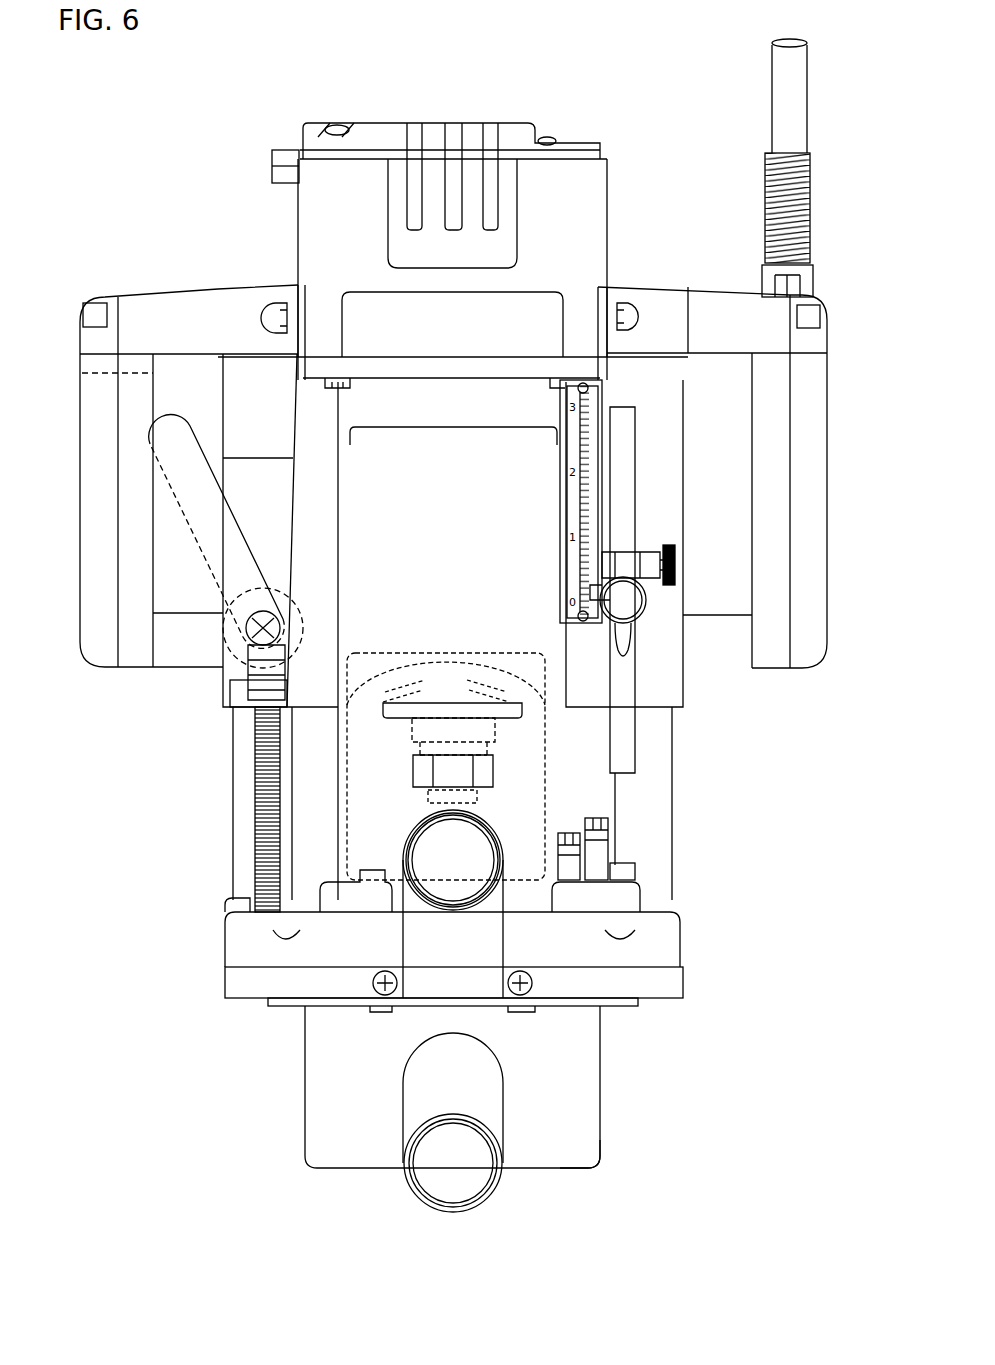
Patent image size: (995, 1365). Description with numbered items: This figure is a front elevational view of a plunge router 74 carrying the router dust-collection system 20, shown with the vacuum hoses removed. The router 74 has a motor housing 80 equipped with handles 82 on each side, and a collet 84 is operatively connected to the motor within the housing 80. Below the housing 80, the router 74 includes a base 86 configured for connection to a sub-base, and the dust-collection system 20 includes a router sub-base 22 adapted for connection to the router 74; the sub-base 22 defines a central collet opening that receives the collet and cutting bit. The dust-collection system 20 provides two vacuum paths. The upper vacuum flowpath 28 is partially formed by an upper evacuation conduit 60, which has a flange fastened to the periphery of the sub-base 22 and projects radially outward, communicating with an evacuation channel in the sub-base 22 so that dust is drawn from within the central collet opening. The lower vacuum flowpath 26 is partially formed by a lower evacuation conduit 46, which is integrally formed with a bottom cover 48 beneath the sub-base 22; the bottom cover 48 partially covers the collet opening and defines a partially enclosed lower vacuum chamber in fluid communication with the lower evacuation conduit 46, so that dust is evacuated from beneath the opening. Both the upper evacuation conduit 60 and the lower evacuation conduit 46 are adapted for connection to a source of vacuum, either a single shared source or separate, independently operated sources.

The router 74 is at (230, 228).
The handles 82 is at (80, 402).
The motor housing 80 is at (683, 688).
The collet 84 is at (421, 783).
The upper evacuation conduit 60 is at (503, 930).
The upper vacuum flowpath 28 is at (415, 895).
The base 86 is at (683, 940).
The router sub-base 22 is at (683, 979).
The router dust-collection system 20 is at (637, 1053).
The bottom cover 48 is at (598, 1167).
The lower vacuum flowpath 26 is at (420, 1195).
The lower evacuation conduit 46 is at (490, 1190).